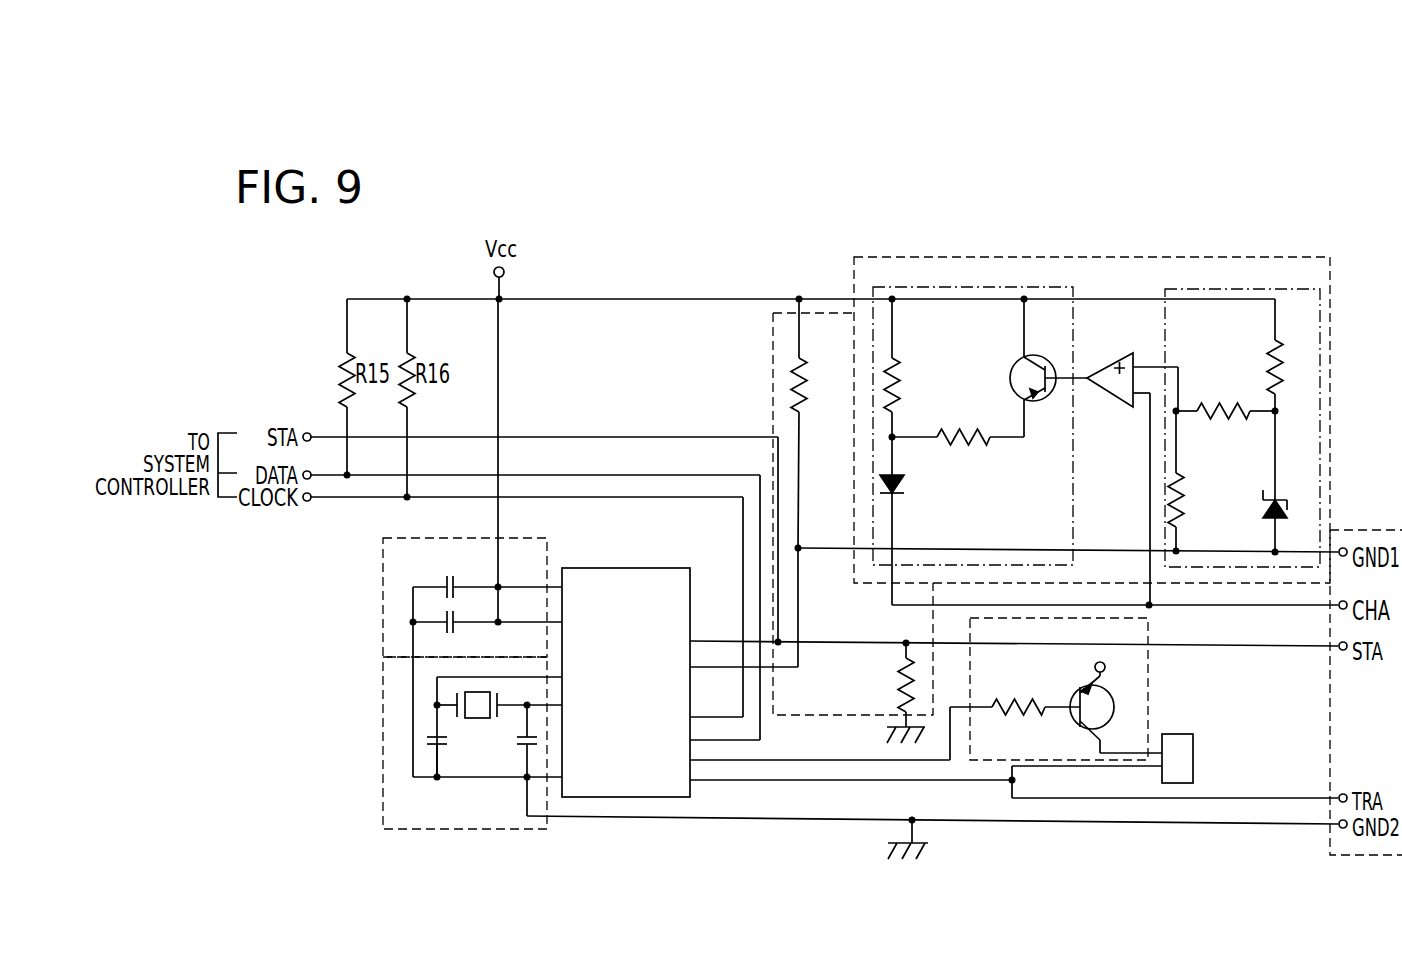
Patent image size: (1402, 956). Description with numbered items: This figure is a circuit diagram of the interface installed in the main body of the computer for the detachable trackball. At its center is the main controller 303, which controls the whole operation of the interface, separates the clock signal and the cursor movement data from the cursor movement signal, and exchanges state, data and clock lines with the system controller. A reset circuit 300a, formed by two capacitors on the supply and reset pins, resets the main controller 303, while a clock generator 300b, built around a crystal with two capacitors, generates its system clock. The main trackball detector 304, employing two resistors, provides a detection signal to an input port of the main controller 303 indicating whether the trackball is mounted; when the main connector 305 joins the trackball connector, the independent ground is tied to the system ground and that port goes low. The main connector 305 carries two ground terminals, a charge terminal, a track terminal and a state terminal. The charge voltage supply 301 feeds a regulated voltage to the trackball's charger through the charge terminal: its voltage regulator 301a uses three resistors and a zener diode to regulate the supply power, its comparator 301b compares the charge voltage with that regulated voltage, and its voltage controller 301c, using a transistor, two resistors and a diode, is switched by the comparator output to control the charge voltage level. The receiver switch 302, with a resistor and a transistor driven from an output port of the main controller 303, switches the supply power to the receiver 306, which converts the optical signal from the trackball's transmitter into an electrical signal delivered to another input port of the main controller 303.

The reset circuit 300a is at (384, 593).
The clock generator 300b is at (386, 752).
The charge voltage supply 301 is at (1116, 262).
The voltage regulator 301a is at (1291, 298).
The comparator 301b is at (1112, 373).
The voltage controller 301c is at (969, 287).
The receiver switch 302 is at (1142, 700).
The main controller 303 is at (628, 566).
The main trackball detector 304 is at (783, 330).
The main connector 305 is at (1377, 858).
The receiver 306 is at (1195, 758).